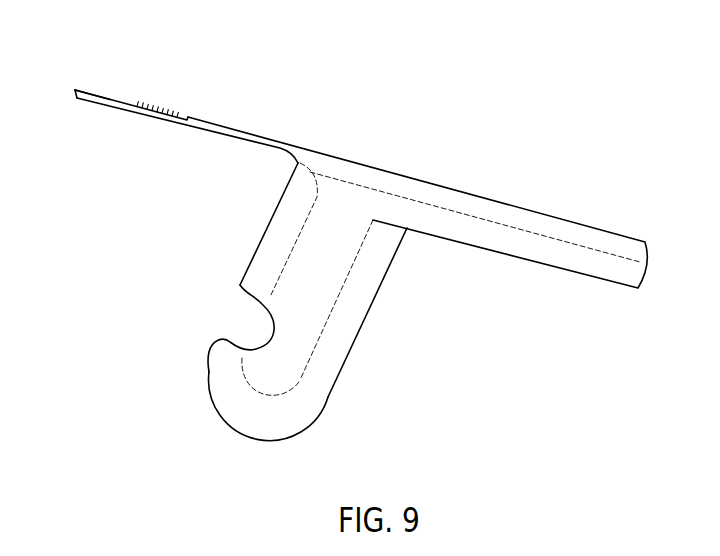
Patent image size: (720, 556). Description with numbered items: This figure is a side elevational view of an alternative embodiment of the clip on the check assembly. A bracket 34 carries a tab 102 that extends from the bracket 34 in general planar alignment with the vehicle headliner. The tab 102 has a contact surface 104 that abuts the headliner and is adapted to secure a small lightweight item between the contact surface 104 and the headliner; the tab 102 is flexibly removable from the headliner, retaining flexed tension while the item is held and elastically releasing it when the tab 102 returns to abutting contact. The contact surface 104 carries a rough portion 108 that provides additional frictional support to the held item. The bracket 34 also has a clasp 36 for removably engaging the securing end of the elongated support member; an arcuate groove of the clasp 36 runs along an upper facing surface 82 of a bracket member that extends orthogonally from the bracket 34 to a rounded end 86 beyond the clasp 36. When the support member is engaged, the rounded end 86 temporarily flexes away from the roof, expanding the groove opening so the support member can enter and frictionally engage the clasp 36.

The bracket 34 is at (568, 247).
The clasp 36 is at (238, 323).
The upper facing surface 82 is at (267, 224).
The rounded end 86 is at (268, 375).
The tab 102 is at (228, 137).
The contact surface 104 is at (110, 97).
The rough portion 108 is at (159, 102).